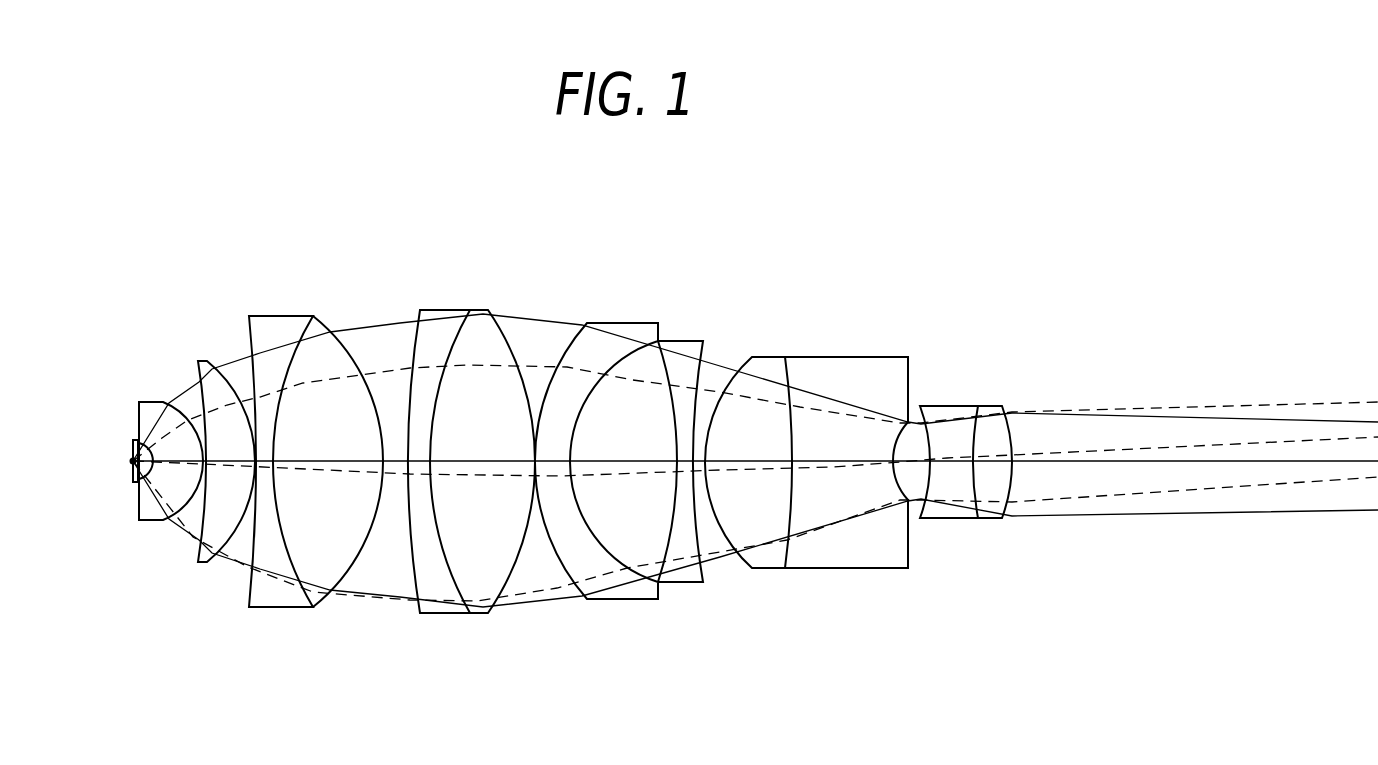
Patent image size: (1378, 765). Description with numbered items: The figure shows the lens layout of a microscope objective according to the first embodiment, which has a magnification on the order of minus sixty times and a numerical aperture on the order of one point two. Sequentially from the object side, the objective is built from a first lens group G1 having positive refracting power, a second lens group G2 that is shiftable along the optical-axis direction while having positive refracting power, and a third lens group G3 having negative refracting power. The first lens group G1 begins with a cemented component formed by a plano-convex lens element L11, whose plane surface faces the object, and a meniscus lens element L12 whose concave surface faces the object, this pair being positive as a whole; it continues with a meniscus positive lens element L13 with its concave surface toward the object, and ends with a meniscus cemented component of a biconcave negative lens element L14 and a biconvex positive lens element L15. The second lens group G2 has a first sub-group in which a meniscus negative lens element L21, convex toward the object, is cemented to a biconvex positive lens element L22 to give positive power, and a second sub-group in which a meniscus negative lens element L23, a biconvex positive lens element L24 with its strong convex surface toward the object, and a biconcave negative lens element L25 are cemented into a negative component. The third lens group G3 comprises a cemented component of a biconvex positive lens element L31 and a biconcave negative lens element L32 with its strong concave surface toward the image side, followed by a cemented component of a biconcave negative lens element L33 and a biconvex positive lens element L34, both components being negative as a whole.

The first lens group G1 is at (367, 223).
The second lens group G2 is at (712, 223).
The third lens group G3 is at (1037, 223).
The plano-convex lens element L11 is at (143, 519).
The meniscus lens element L12 is at (152, 519).
The meniscus positive lens element L13 is at (205, 563).
The biconcave negative lens element L14 is at (278, 608).
The biconvex positive lens element L15 is at (323, 608).
The meniscus negative lens element L21 is at (442, 614).
The biconvex positive lens element L22 is at (473, 614).
The meniscus negative lens element L23 is at (602, 600).
The biconvex positive lens element L24 is at (632, 600).
The biconcave negative lens element L25 is at (677, 583).
The biconvex positive lens element L31 is at (760, 569).
The biconcave negative lens element L32 is at (822, 569).
The biconcave negative lens element L33 is at (943, 519).
The biconvex positive lens element L34 is at (990, 519).